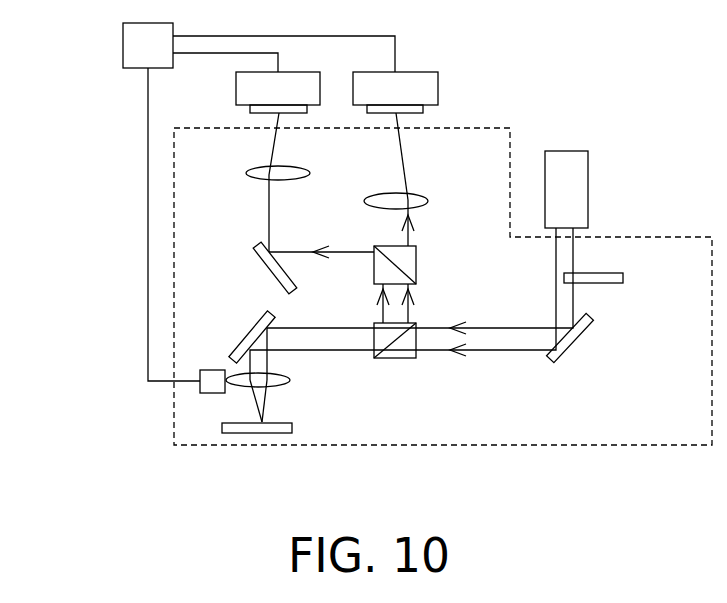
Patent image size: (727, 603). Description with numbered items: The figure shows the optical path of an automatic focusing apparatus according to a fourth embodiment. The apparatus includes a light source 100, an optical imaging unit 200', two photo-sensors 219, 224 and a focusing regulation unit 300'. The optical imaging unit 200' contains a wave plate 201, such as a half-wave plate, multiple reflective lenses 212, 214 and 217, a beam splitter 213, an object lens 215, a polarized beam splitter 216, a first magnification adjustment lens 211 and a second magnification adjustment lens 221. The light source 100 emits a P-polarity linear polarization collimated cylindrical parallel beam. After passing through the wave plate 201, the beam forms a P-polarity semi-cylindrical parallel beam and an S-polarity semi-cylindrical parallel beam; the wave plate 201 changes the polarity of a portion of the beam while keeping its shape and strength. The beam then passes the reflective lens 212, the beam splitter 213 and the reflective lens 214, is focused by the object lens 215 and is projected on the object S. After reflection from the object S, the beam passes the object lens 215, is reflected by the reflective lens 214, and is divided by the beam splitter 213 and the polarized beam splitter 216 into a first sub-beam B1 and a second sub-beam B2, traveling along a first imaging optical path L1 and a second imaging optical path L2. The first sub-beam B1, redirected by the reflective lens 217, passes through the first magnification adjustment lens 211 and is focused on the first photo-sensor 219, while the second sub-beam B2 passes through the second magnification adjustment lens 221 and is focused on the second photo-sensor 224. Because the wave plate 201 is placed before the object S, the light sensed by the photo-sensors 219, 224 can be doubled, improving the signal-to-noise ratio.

The focusing regulation unit 300' is at (105, 45).
The first photo-sensor 219 is at (244, 87).
The second photo-sensor 224 is at (431, 87).
The first imaging optical path L1 is at (273, 143).
The second imaging optical path L2 is at (403, 152).
The first magnification adjustment lens 211 is at (248, 173).
The second magnification adjustment lens 221 is at (428, 201).
The first sub-beam B1 is at (321, 236).
The second sub-beam B2 is at (428, 223).
The reflective lens 217 is at (268, 258).
The polarized beam splitter 216 is at (416, 268).
The light source 100 is at (588, 190).
The wave plate 201 is at (623, 278).
The reflective lens 214 is at (247, 346).
The reflective lens 212 is at (572, 340).
The object lens 215 is at (289, 382).
The object S is at (292, 428).
The beam splitter 213 is at (395, 360).
The optical imaging unit 200' is at (443, 320).